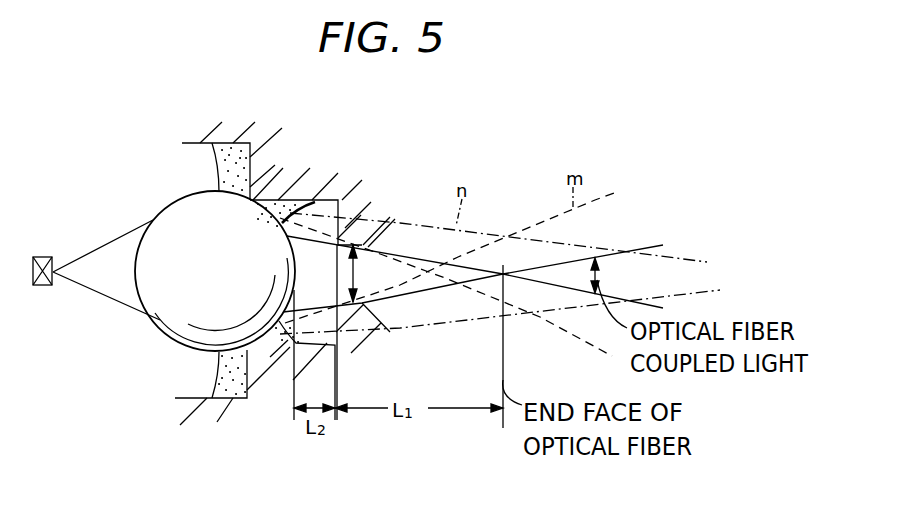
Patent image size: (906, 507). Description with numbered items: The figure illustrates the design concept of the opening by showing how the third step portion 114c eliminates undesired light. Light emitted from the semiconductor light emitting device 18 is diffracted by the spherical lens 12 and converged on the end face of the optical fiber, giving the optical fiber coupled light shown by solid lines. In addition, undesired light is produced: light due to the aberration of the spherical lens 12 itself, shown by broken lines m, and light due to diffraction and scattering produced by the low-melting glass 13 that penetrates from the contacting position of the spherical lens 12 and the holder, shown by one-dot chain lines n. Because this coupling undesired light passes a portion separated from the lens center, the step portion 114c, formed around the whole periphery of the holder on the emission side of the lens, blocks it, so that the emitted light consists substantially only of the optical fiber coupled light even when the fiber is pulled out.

The spherical lens 12 is at (172, 213).
The low-melting glass 13 is at (228, 143).
The semiconductor light emitting device 18 is at (43, 285).
The third step portion 114c is at (340, 204).